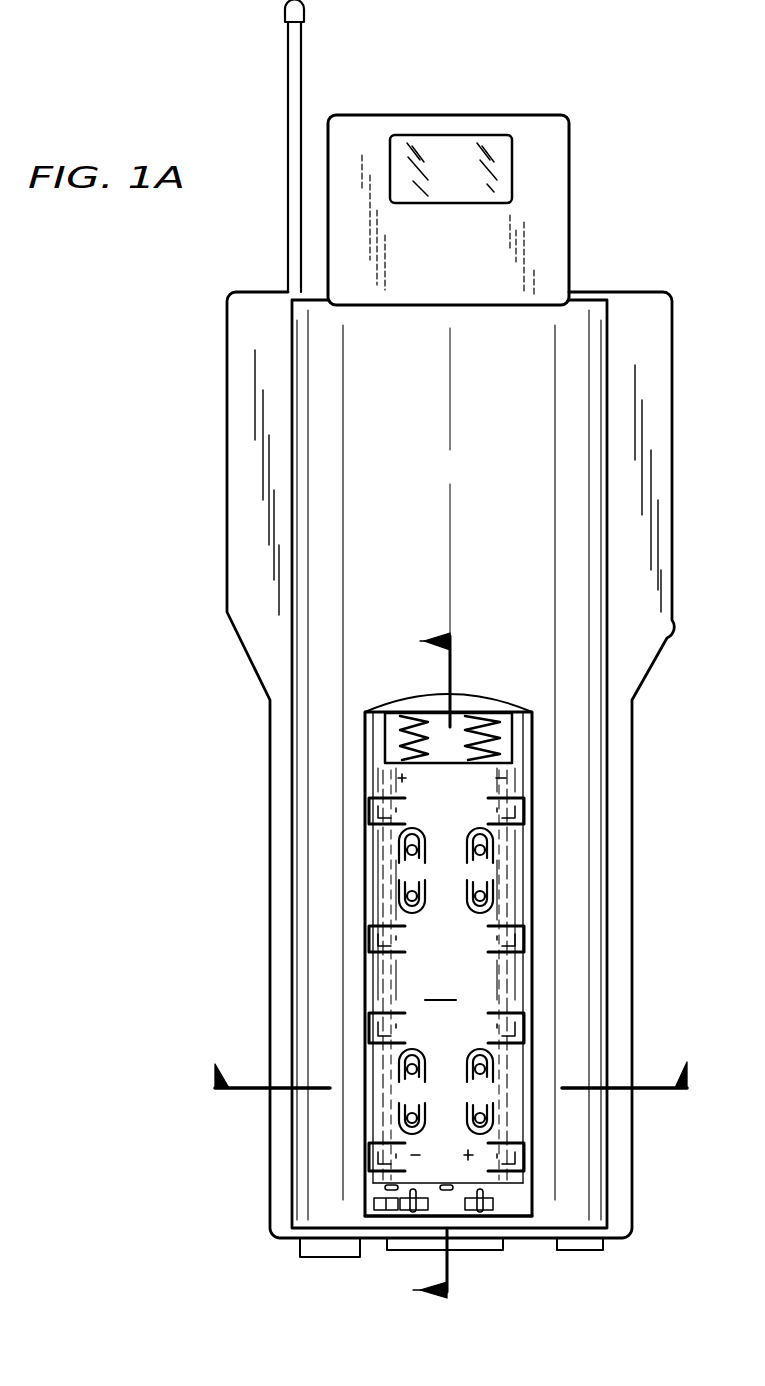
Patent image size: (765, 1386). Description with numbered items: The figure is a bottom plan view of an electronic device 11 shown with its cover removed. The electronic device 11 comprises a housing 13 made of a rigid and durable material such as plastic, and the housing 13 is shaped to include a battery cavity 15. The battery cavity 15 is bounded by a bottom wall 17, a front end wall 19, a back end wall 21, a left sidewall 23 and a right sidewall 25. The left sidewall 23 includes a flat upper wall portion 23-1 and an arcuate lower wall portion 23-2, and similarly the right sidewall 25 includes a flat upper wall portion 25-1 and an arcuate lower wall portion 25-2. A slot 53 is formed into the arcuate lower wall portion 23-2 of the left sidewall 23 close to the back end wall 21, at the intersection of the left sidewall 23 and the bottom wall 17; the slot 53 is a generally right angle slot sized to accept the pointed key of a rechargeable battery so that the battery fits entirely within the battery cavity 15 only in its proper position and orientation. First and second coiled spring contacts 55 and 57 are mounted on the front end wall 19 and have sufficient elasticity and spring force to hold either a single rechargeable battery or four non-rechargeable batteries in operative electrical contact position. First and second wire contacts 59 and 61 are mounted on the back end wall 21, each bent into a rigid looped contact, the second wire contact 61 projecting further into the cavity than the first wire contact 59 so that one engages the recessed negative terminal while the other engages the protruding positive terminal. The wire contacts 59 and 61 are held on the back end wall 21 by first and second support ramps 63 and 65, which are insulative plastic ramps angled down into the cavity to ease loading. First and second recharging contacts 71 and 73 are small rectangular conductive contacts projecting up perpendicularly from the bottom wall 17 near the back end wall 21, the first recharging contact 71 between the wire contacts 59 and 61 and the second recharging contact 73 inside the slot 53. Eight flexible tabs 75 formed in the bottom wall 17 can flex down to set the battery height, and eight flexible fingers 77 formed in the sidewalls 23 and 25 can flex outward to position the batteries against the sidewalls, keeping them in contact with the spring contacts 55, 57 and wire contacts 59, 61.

The electronic device 11 is at (173, 1000).
The housing 13 is at (652, 641).
The battery cavity 15 is at (384, 843).
The bottom wall 17 is at (448, 955).
The front end wall 19 is at (503, 713).
The back end wall 21 is at (517, 1212).
The left sidewall 23 is at (383, 975).
The flat upper wall portion 23-1 is at (368, 887).
The arcuate lower wall portion 23-2 is at (385, 780).
The right sidewall 25 is at (507, 893).
The flat upper wall portion 25-1 is at (488, 1028).
The arcuate lower wall portion 25-2 is at (507, 850).
The slot 53 is at (388, 1188).
The first coiled spring contact 55 is at (385, 725).
The second coiled spring contact 57 is at (480, 728).
The first wire contact 59 is at (481, 1203).
The second wire contact 61 is at (412, 1212).
The first support ramp 63 is at (496, 1207).
The second support ramp 65 is at (397, 1203).
The first recharging contact 71 is at (448, 1194).
The second recharging contact 73 is at (388, 1192).
The flexible tabs 75 is at (405, 866).
The flexible fingers 77 is at (405, 808).